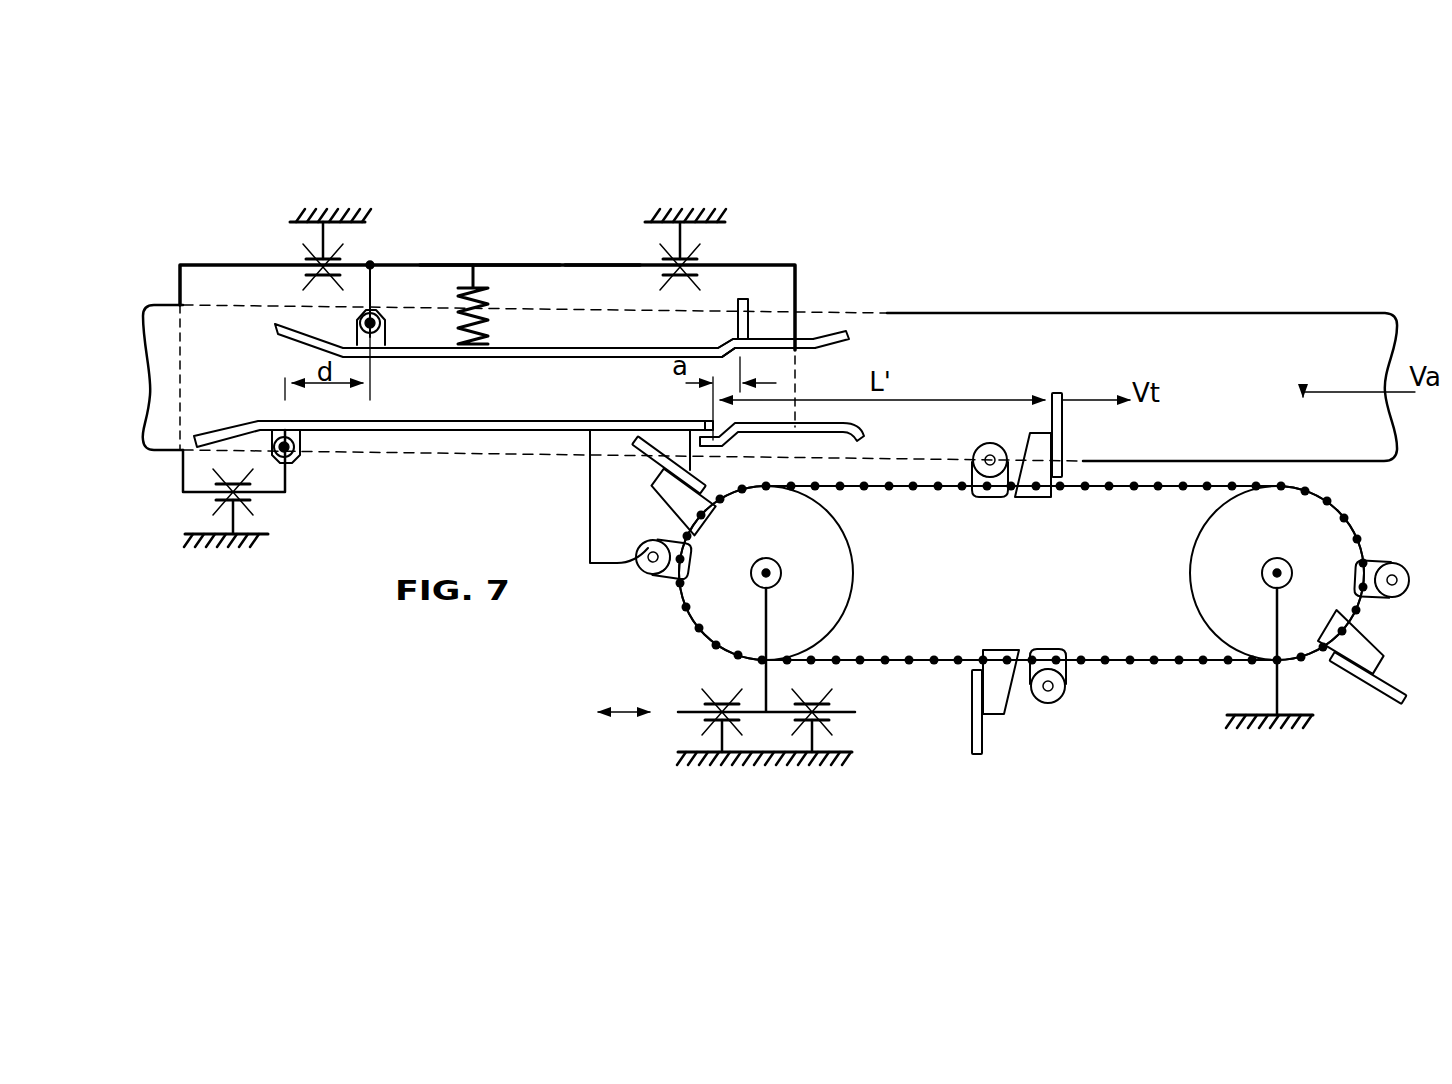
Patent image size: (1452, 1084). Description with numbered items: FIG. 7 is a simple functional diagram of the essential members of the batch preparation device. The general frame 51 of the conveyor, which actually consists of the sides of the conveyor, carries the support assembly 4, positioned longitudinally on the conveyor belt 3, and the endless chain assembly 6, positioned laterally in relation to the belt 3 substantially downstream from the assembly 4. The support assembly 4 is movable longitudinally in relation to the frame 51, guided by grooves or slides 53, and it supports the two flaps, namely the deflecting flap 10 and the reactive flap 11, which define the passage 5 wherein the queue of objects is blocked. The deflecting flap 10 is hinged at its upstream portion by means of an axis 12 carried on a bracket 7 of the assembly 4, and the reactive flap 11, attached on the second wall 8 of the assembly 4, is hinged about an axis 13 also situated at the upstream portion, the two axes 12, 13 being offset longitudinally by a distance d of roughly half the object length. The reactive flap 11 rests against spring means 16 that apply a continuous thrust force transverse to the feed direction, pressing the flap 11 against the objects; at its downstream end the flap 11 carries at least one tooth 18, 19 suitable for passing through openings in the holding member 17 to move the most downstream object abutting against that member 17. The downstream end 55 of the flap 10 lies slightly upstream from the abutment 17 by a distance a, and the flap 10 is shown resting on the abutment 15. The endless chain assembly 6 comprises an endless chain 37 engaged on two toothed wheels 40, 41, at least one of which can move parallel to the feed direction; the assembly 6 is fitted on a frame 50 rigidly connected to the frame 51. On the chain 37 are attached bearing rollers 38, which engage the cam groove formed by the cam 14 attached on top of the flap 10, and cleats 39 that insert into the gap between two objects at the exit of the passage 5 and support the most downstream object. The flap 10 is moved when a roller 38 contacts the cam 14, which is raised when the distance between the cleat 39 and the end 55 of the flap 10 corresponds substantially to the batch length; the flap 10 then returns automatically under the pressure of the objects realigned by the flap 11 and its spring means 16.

The conveyor belt 3 is at (170, 318).
The support assembly 4 is at (217, 262).
The passage 5 is at (487, 399).
The endless chain assembly 6 is at (979, 557).
The bracket 7 is at (286, 507).
The second wall 8 is at (430, 262).
The deflecting flap 10 is at (382, 432).
The reactive flap 11 is at (412, 358).
The axis 12 is at (291, 456).
The axis 13 is at (372, 318).
The cam 14 is at (642, 547).
The abutment 15 is at (722, 445).
The spring means 16 is at (495, 300).
The holding member 17 is at (748, 318).
The tooth 18 is at (770, 348).
The tooth 19 is at (770, 348).
The endless chain 37 is at (899, 657).
The bearing roller 38 is at (977, 450).
The cleat 39 is at (1057, 392).
The toothed wheel 40 is at (832, 545).
The toothed wheel 41 is at (1210, 548).
The frame 50 is at (762, 684).
The general frame of the conveyor 51 is at (357, 210).
The slides 53 is at (305, 262).
The downstream end of the flap 55 is at (707, 428).